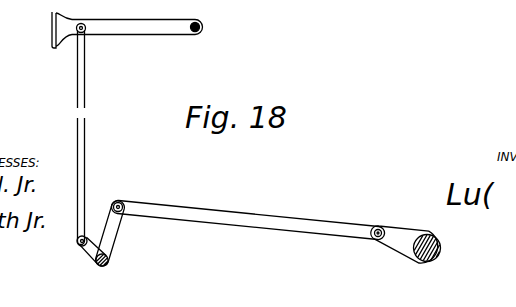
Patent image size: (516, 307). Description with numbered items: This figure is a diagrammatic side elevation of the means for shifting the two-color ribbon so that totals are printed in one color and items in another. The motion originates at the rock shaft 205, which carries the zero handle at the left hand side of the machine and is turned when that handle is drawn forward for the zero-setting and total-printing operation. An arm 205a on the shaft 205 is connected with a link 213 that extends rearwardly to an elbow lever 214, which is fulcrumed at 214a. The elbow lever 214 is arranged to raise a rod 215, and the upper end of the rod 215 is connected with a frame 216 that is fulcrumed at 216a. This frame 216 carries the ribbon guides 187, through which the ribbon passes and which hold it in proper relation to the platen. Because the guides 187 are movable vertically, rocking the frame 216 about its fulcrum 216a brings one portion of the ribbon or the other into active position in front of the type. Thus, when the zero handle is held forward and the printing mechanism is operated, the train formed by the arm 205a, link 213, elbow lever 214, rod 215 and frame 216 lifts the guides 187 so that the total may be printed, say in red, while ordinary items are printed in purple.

The ribbon guides 187 is at (52, 31).
The frame 216 is at (127, 30).
The fulcrum of frame 216a is at (202, 38).
The rod 215 is at (86, 180).
The elbow lever 214 is at (115, 232).
The fulcrum of elbow lever 214a is at (108, 265).
The link 213 is at (268, 217).
The rock shaft 205 is at (445, 252).
The arm 205a is at (393, 252).